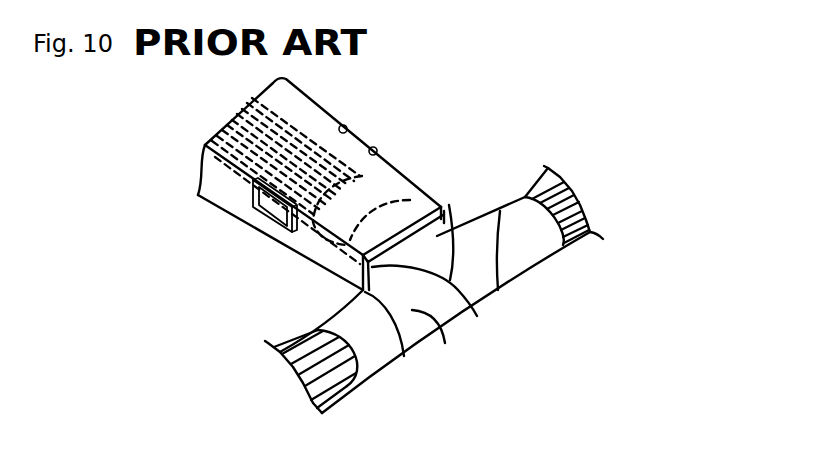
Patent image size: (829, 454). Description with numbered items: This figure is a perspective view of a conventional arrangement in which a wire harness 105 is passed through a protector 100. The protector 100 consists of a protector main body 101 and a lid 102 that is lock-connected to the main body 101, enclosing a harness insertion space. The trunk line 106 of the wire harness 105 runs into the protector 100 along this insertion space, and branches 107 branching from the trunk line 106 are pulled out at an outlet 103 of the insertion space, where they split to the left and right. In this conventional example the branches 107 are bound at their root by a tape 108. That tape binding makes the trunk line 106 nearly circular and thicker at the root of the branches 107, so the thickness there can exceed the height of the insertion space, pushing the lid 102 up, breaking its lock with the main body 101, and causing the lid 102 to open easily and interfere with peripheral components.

The protector 100 is at (307, 197).
The protector main body 101 is at (303, 257).
The lid 102 is at (393, 183).
The outlet 103 is at (438, 234).
The wire harness 105 is at (392, 366).
The trunk line 106 is at (295, 125).
The branches 107 is at (498, 290).
The tape 108 is at (445, 343).